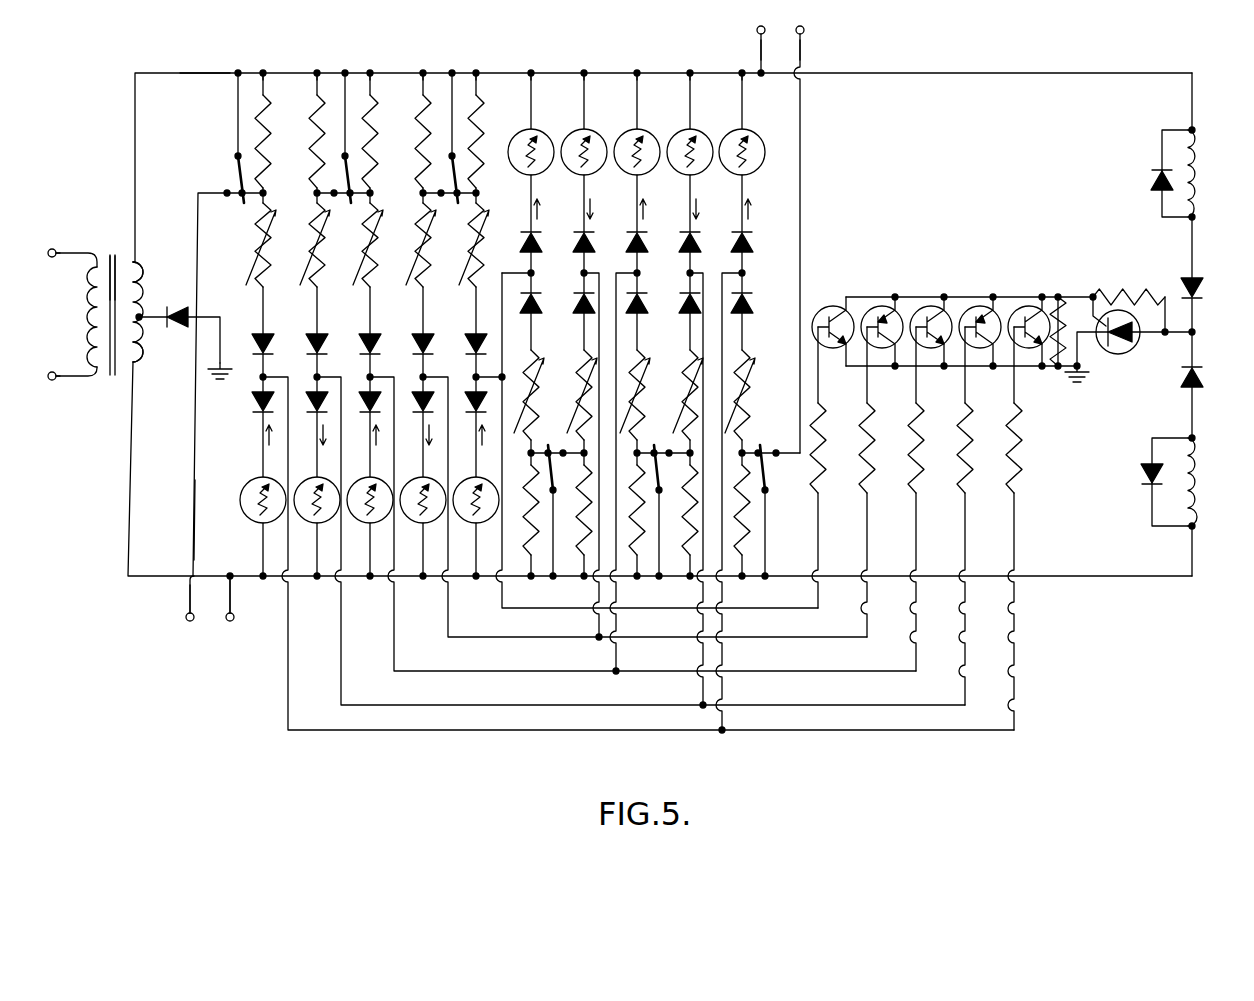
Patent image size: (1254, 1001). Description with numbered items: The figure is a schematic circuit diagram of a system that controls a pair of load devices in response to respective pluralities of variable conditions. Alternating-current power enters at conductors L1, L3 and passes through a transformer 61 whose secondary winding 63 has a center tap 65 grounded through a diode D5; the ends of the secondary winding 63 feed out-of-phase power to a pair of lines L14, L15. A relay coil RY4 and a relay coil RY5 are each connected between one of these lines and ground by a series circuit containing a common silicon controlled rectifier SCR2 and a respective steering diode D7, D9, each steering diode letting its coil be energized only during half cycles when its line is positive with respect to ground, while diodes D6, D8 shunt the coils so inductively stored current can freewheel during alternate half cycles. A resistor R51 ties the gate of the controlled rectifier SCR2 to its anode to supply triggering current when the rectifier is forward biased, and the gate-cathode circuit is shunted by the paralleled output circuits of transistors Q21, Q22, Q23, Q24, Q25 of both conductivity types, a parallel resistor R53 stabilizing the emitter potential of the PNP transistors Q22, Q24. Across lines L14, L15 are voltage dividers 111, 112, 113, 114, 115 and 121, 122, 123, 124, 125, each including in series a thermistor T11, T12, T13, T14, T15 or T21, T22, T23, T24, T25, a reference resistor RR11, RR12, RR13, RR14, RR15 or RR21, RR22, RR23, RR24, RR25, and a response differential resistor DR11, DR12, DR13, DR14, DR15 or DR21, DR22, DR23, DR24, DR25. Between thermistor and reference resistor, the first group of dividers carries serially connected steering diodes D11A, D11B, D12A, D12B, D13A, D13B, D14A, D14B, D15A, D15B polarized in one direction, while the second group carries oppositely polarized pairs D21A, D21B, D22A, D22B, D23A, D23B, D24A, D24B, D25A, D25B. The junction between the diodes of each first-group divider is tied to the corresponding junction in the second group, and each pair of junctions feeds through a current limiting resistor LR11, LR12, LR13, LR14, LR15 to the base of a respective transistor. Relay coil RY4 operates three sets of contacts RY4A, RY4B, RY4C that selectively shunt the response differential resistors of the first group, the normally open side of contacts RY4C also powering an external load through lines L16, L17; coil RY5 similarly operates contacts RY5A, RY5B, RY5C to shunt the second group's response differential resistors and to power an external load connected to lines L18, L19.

The conductor L1 is at (80, 251).
The conductor L3 is at (78, 379).
The transformer 61 is at (113, 256).
The secondary winding 63 is at (141, 286).
The center tap 65 is at (141, 323).
The diode D5 is at (179, 311).
The line L14 is at (203, 71).
The line L15 is at (180, 582).
The line L16 is at (195, 520).
The line L17 is at (232, 601).
The line L18 is at (762, 62).
The line L19 is at (803, 62).
The voltage divider 111 is at (271, 65).
The voltage divider 112 is at (325, 66).
The voltage divider 113 is at (378, 66).
The voltage divider 114 is at (431, 66).
The voltage divider 115 is at (484, 66).
The voltage divider 121 is at (747, 66).
The voltage divider 122 is at (695, 66).
The voltage divider 123 is at (643, 66).
The voltage divider 124 is at (591, 66).
The voltage divider 125 is at (539, 67).
The contacts RY4C is at (240, 178).
The contacts RY4B is at (352, 181).
The contacts RY4A is at (459, 181).
The contacts RY5C is at (549, 478).
The contacts RY5B is at (661, 478).
The contacts RY5A is at (768, 476).
The relay coil RY4 is at (1201, 182).
The relay coil RY5 is at (1197, 465).
The response differential resistor DR11 is at (275, 118).
The response differential resistor DR12 is at (319, 145).
The response differential resistor DR13 is at (381, 118).
The response differential resistor DR14 is at (424, 145).
The response differential resistor DR15 is at (487, 118).
The response differential resistor DR21 is at (753, 550).
The response differential resistor DR22 is at (691, 562).
The response differential resistor DR23 is at (640, 560).
The response differential resistor DR24 is at (580, 562).
The response differential resistor DR25 is at (534, 560).
The reference resistor RR11 is at (258, 250).
The reference resistor RR12 is at (313, 258).
The reference resistor RR13 is at (367, 260).
The reference resistor RR14 is at (420, 260).
The reference resistor RR15 is at (474, 260).
The reference resistor RR21 is at (749, 412).
The reference resistor RR22 is at (689, 405).
The reference resistor RR23 is at (639, 375).
The reference resistor RR24 is at (581, 405).
The reference resistor RR25 is at (536, 375).
The steering diode D11A is at (257, 332).
The steering diode D12A is at (311, 332).
The steering diode D13A is at (365, 332).
The steering diode D14A is at (418, 332).
The steering diode D15A is at (472, 332).
The steering diode D11B is at (258, 398).
The steering diode D12B is at (311, 392).
The steering diode D13B is at (364, 392).
The steering diode D14B is at (416, 392).
The steering diode D15B is at (470, 392).
The diode D21A is at (753, 310).
The diode D22A is at (685, 304).
The diode D23A is at (642, 313).
The diode D24A is at (579, 304).
The diode D25A is at (536, 313).
The diode D21B is at (752, 242).
The diode D22B is at (701, 242).
The diode D23B is at (648, 242).
The diode D24B is at (596, 242).
The diode D25B is at (539, 242).
The thermistor T11 is at (251, 518).
The thermistor T12 is at (306, 518).
The thermistor T13 is at (361, 518).
The thermistor T14 is at (414, 518).
The thermistor T15 is at (488, 518).
The thermistor T21 is at (757, 135).
The thermistor T22 is at (703, 135).
The thermistor T23 is at (651, 135).
The thermistor T24 is at (599, 135).
The thermistor T25 is at (549, 135).
The transistor Q21 is at (1027, 306).
The transistor Q22 is at (977, 306).
The transistor Q23 is at (929, 306).
The transistor Q24 is at (880, 306).
The transistor Q25 is at (832, 306).
The parallel resistor R53 is at (1060, 318).
The resistor R51 is at (1130, 290).
The silicon controlled rectifier SCR2 is at (1118, 356).
The current limiting resistor LR11 is at (1022, 438).
The current limiting resistor LR12 is at (976, 418).
The current limiting resistor LR13 is at (927, 418).
The current limiting resistor LR14 is at (880, 416).
The current limiting resistor LR15 is at (830, 416).
The diode D6 is at (1150, 182).
The steering diode D7 is at (1200, 296).
The diode D8 is at (1143, 474).
The steering diode D9 is at (1200, 382).